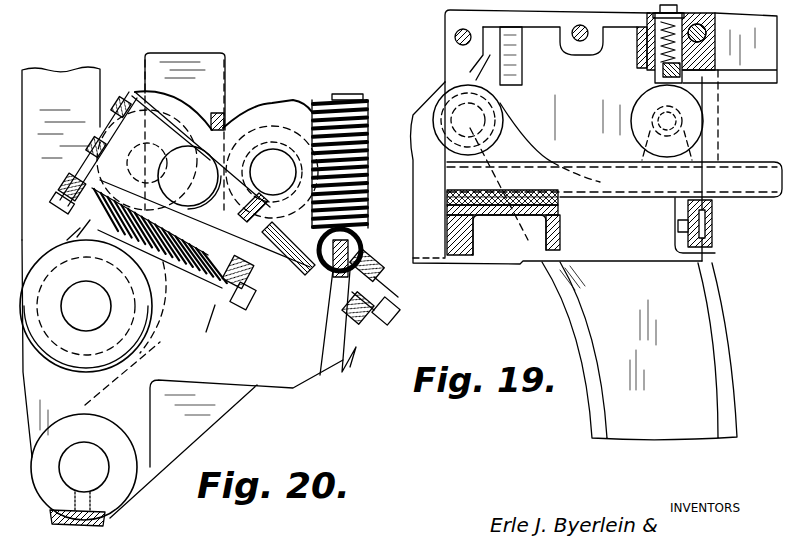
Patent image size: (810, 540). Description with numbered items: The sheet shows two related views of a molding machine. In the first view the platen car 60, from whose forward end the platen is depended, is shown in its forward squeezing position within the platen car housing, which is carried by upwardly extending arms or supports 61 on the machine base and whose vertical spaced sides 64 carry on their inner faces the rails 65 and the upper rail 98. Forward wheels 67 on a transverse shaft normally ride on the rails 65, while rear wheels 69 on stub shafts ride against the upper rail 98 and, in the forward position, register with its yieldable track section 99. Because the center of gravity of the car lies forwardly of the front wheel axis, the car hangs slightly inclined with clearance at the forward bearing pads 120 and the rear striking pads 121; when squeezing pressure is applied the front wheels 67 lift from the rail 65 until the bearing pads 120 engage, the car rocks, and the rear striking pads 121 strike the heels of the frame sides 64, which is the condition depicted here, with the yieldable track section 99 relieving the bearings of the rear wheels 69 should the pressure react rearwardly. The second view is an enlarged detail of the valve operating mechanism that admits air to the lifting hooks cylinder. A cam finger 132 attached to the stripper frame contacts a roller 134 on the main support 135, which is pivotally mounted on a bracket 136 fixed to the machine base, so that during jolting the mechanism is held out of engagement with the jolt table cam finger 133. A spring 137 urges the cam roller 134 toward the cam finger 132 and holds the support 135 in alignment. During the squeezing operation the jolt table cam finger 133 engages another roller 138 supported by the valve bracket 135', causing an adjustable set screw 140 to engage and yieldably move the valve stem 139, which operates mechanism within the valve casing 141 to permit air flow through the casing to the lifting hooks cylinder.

In FIG. 20, the cam finger 132 is at (70, 77).
In FIG. 20, the cam finger 133 is at (200, 62).
In FIG. 20, the roller 134 is at (133, 93).
In FIG. 20, the valve casing 141 is at (212, 128).
In FIG. 20, the valve bracket 135' is at (271, 86).
In FIG. 20, the roller 138 is at (253, 140).
In FIG. 20, the valve stem 139 is at (268, 197).
In FIG. 20, the spring 137 is at (348, 95).
In FIG. 20, the set screw 140 is at (288, 268).
In FIG. 20, the bracket 136 is at (135, 342).
In FIG. 20, the main support 135 is at (182, 383).
In FIG. 19, the platen car 60 is at (413, 152).
In FIG. 19, the sides 64 is at (563, 58).
In FIG. 19, the forward wheels 67 is at (500, 120).
In FIG. 19, the rear wheels 69 is at (640, 108).
In FIG. 19, the upper rail 98 is at (753, 78).
In FIG. 19, the yieldable track section 99 is at (672, 80).
In FIG. 19, the rail 65 is at (757, 185).
In FIG. 19, the forward bearing pads 120 is at (445, 191).
In FIG. 19, the rear striking pads 121 is at (713, 246).
In FIG. 19, the arms or supports 61 is at (658, 338).